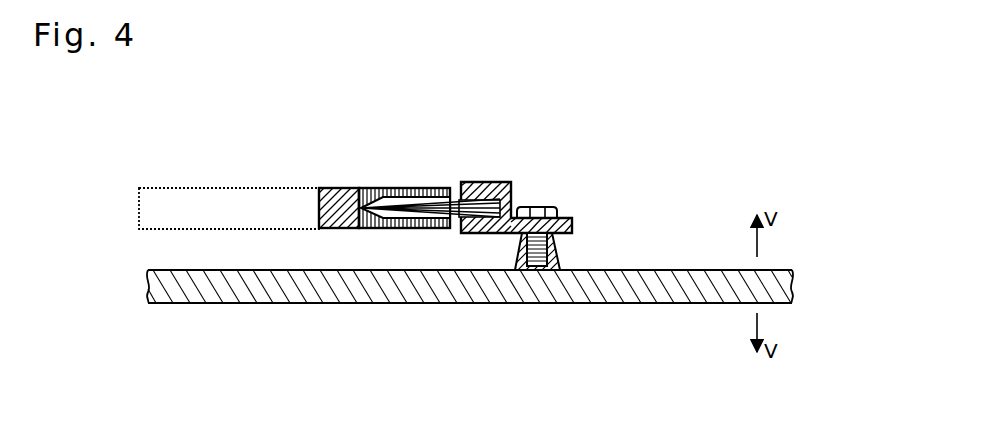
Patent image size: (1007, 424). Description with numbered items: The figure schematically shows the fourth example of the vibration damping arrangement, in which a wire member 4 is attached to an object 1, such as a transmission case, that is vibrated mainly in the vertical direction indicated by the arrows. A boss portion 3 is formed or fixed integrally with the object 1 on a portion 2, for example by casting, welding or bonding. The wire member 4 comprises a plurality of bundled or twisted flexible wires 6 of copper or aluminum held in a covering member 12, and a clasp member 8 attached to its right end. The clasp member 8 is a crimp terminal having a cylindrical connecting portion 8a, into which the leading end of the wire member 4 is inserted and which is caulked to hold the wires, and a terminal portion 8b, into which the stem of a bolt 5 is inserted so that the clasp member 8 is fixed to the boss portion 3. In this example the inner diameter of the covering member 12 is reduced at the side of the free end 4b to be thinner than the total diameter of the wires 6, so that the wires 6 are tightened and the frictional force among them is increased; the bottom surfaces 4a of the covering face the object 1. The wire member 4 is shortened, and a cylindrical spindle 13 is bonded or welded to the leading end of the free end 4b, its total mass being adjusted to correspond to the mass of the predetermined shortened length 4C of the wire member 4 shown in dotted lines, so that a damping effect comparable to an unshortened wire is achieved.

The object 1 is at (320, 288).
The portion 2 is at (499, 311).
The boss portion 3 is at (558, 262).
The wire member 4 is at (409, 150).
The bottom surface 4a is at (442, 238).
The free end 4b is at (366, 238).
The shortened length 4C is at (227, 203).
The bolt 5 is at (542, 207).
The wires 6 is at (456, 199).
The clasp member 8 is at (512, 177).
The cylindrical connecting portion 8a is at (485, 196).
The terminal portion 8b is at (573, 216).
The covering member 12 is at (383, 197).
The spindle 13 is at (340, 196).